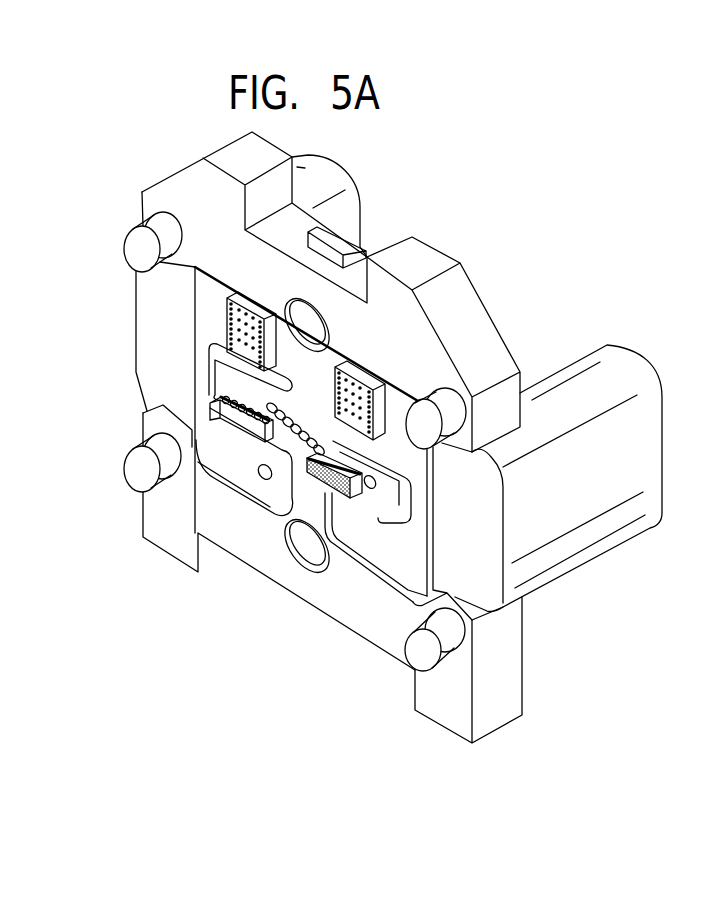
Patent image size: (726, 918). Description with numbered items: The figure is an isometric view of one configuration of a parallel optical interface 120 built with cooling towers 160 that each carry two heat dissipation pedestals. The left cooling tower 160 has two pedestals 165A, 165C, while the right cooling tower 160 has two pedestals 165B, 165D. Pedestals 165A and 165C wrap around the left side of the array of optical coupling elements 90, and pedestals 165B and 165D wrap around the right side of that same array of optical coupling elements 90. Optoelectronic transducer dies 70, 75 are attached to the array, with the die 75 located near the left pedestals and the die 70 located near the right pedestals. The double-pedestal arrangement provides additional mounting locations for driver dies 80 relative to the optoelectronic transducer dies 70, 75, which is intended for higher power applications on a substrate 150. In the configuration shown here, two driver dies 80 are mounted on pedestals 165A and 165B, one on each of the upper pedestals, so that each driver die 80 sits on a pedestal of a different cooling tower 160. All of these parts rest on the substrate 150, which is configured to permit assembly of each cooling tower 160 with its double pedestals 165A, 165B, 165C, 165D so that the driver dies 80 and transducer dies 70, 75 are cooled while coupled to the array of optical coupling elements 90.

The parallel optical interface 120 is at (489, 188).
The substrate 150 is at (475, 307).
The cooling tower 160 is at (168, 368).
The pedestal 165A is at (207, 301).
The pedestal 165B is at (398, 413).
The pedestal 165C is at (241, 480).
The pedestal 165D is at (408, 562).
The driver die 80 is at (268, 325).
The optoelectronic transducer die 75 is at (263, 437).
The array of optical coupling elements 90 is at (283, 418).
The optoelectronic transducer die 70 is at (338, 522).